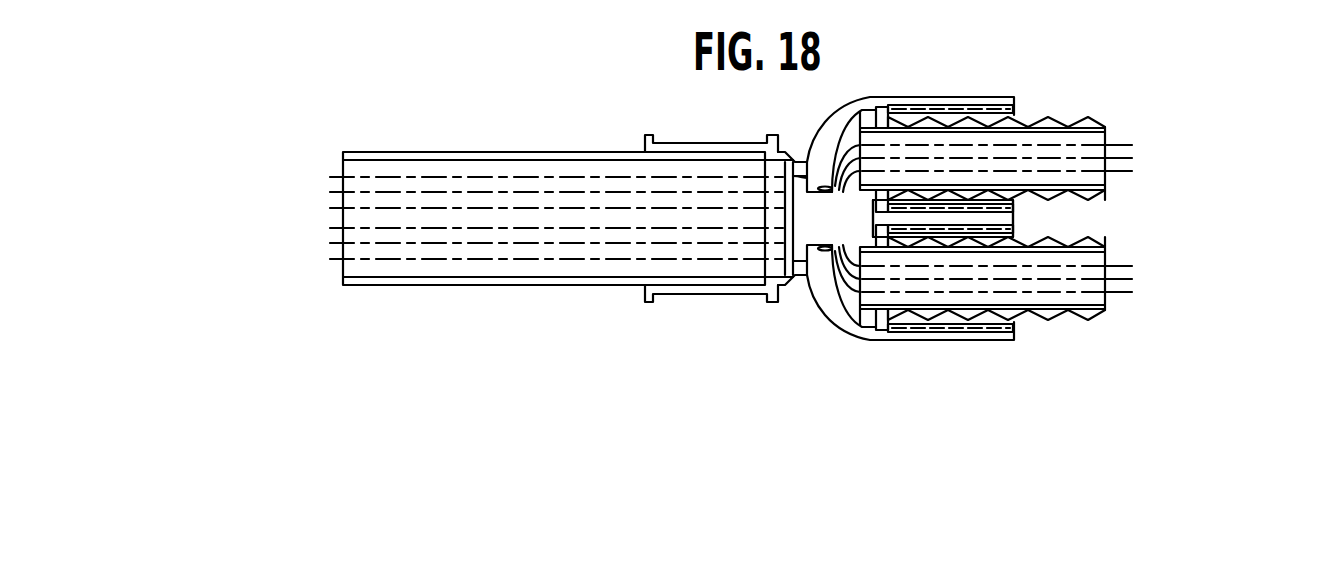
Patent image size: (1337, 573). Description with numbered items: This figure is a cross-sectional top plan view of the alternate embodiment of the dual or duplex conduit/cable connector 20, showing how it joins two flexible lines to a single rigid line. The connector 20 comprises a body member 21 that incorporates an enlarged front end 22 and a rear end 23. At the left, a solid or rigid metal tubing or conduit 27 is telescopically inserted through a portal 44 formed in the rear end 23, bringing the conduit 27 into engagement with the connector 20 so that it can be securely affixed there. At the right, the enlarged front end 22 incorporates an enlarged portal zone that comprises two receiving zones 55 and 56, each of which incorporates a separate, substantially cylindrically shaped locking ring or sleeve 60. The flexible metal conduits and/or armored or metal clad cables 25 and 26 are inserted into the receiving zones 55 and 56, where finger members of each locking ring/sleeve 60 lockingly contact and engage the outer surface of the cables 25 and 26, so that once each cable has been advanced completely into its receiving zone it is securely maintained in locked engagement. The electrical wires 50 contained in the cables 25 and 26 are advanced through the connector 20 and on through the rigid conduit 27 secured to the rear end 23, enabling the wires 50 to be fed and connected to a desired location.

The dual/duplex conduit/cable connector 20 is at (862, 400).
The body member 21 is at (824, 316).
The front end 22 is at (1015, 100).
The rear end 23 is at (645, 141).
The flexible metal conduit or armored/metal clad cable 25 is at (1108, 127).
The flexible metal conduit or armored/metal clad cable 26 is at (1070, 317).
The solid or rigid metal tubing or conduit 27 is at (370, 153).
The portal 44 is at (640, 300).
The electrical wires 50 is at (329, 203).
The receiving zone 55 is at (1005, 103).
The receiving zone 56 is at (1013, 332).
The locking ring or sleeve 60 is at (977, 107).